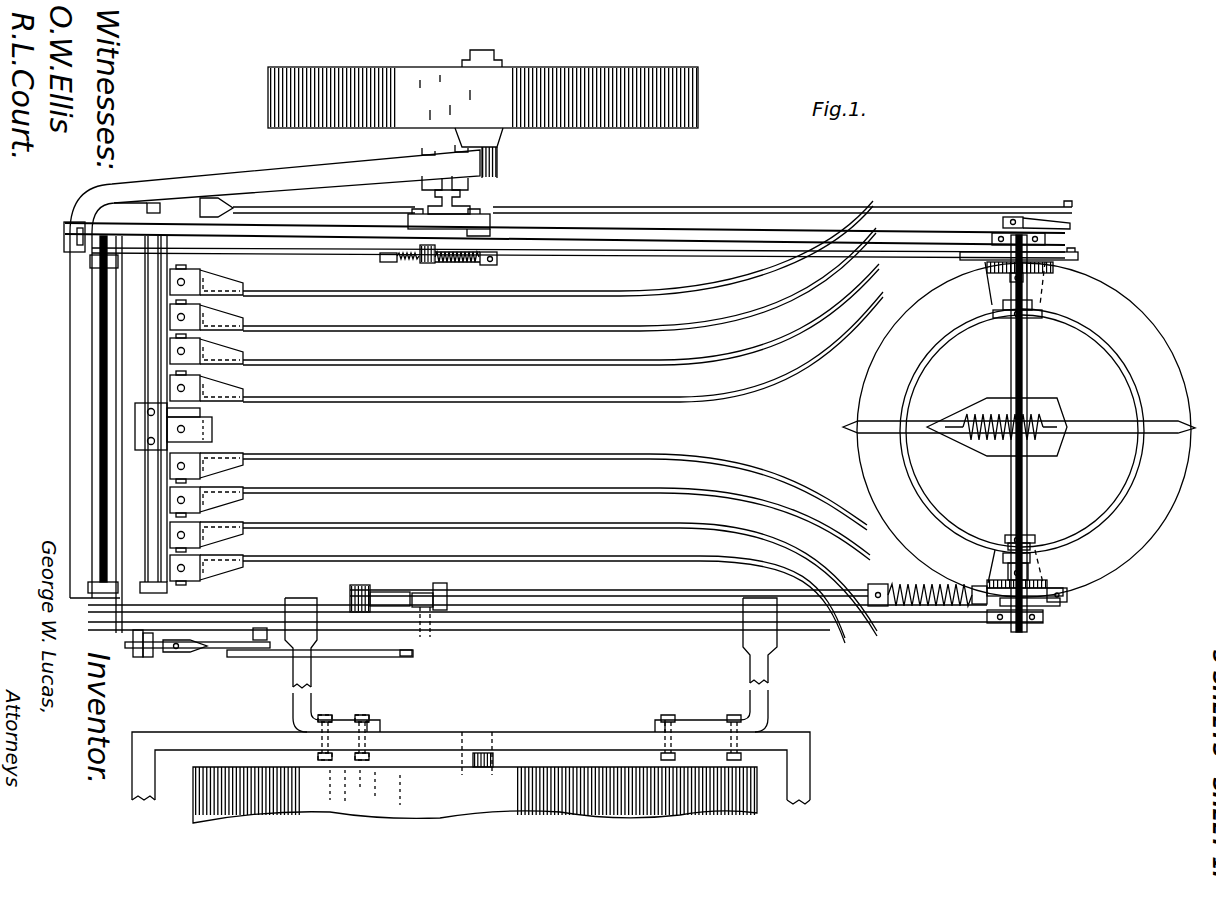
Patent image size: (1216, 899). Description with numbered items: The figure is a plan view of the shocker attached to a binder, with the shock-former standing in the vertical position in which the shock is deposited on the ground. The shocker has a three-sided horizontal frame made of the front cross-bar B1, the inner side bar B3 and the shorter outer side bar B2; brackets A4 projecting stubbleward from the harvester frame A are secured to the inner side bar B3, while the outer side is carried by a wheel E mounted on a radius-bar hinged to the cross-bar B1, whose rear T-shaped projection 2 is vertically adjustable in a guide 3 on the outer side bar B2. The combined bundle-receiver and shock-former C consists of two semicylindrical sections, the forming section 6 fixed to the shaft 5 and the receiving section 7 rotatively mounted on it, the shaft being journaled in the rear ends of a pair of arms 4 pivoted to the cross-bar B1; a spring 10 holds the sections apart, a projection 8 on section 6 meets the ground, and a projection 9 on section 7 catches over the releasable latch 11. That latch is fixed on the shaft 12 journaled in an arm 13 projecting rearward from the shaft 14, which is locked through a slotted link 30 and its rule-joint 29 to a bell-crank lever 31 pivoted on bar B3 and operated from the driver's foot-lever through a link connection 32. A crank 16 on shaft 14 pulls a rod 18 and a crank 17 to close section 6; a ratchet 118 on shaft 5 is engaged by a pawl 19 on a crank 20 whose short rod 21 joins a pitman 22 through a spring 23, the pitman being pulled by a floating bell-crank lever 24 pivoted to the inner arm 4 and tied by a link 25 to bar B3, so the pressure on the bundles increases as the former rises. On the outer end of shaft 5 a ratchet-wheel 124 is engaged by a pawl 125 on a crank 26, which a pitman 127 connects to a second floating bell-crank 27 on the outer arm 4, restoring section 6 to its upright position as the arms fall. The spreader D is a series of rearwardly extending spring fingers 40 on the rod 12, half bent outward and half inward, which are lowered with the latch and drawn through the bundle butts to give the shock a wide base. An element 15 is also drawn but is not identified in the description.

The T-shaped projection 2 is at (466, 192).
The guide 3 is at (486, 223).
The arms 4 is at (938, 234).
The shaft 5 is at (1020, 626).
The forming section 6 is at (880, 478).
The receiving section 7 is at (1147, 505).
The projection 8 is at (845, 428).
The projection 9 is at (1190, 433).
The spring 10 is at (1033, 438).
The releasable latch 11 is at (166, 431).
The shaft 12 is at (183, 583).
The arm 13 is at (147, 461).
The shaft 14 is at (147, 513).
The adjusting block 15 is at (215, 440).
The crank 16 is at (178, 207).
The crank 17 is at (1071, 229).
The rod 18 is at (757, 209).
The pawl 19 is at (1046, 583).
The crank 20 is at (1050, 600).
The short rod 21 is at (991, 616).
The pitman 22 is at (845, 597).
The spring 23 is at (944, 608).
The floating bell-crank lever 24 is at (400, 582).
The link 25 is at (426, 603).
The crank 26 is at (1078, 258).
The second floating bell-crank lever 27 is at (413, 262).
The rule-joint connection 29 is at (198, 658).
The slotted link 30 is at (166, 650).
The bell-crank lever 31 is at (218, 657).
The link-and-lever connection 32 is at (383, 658).
The spring teeth or fingers 40 is at (530, 420).
The ratchet 118 is at (1000, 578).
The ratchet-wheel 124 is at (997, 267).
The pawl 125 is at (1053, 268).
The pitman 127 is at (706, 262).
The harvester frame A is at (555, 733).
The brackets A4 is at (795, 672).
The front cross-bar B1 is at (90, 403).
The outer side bar B2 is at (187, 227).
The inner side bar B3 is at (572, 631).
The combined bundle-receiver and shock-former C is at (1137, 578).
The spreader D is at (659, 438).
The wheel E is at (483, 110).